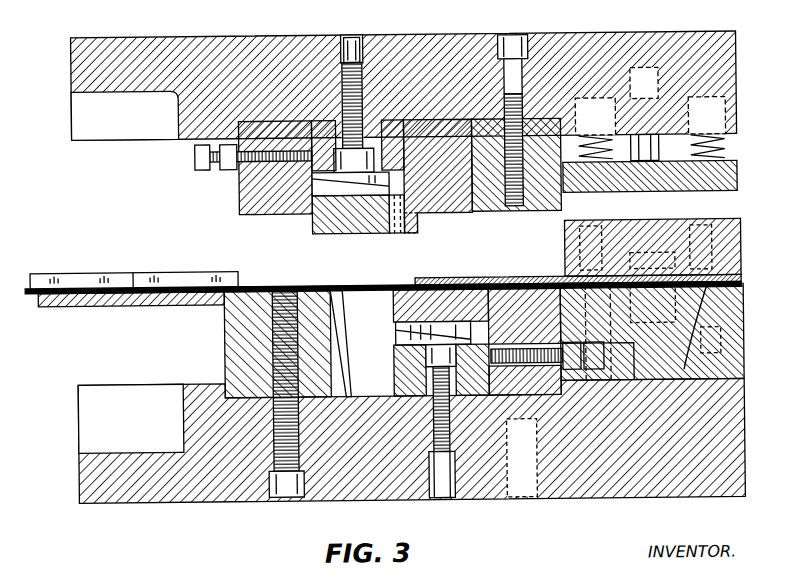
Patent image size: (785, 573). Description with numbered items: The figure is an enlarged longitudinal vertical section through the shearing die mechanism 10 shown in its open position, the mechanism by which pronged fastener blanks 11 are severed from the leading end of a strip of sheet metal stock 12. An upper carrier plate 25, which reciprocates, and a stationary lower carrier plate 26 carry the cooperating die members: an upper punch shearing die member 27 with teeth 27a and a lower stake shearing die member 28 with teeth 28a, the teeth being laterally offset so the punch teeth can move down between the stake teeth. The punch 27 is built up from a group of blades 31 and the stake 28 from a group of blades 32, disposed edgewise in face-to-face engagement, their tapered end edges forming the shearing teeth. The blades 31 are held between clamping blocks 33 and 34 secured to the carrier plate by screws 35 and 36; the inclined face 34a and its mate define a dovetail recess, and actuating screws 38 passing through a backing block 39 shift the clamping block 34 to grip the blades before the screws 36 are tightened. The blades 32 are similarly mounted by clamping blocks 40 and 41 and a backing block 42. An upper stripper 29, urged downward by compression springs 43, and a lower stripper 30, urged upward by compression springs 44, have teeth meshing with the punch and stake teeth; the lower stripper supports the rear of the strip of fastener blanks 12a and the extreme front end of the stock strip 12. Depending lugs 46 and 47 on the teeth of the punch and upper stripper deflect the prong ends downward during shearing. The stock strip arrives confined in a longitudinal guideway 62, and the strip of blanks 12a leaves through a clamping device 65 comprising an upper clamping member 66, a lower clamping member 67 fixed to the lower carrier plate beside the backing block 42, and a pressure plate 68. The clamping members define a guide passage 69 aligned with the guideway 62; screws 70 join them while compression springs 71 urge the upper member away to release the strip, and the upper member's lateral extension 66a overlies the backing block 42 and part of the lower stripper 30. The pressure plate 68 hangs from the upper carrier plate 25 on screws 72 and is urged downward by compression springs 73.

The shearing die mechanism 10 is at (175, 219).
The pronged fastener blanks 11 is at (415, 284).
The strip of sheet metal stock 12 is at (272, 286).
The strip of fastener blanks 12a is at (528, 277).
The upper carrier plate 25 is at (712, 24).
The lower carrier plate 26 is at (732, 448).
The punch shearing die member 27 is at (482, 255).
The teeth of the punch 27a is at (358, 234).
The stake shearing die member 28 is at (388, 275).
The teeth of the stake 28a is at (396, 330).
The upper stripper 29 is at (318, 228).
The lower stripper 30 is at (393, 306).
The blades of the punch 31 is at (460, 124).
The blades of the stake 32 is at (344, 290).
The clamping block 33 is at (565, 208).
The clamping block 34 is at (330, 130).
The inclined face of clamping block 34a is at (400, 125).
The screws 35 is at (530, 70).
The connecting screws 36 is at (372, 90).
The actuating screws 38 is at (196, 158).
The backing block 39 is at (240, 185).
The clamping block 40 is at (224, 350).
The clamping block 41 is at (380, 378).
The backing block 42 is at (555, 385).
The compression springs 43 is at (246, 202).
The compression springs 44 is at (440, 305).
The depending lugs 46 is at (397, 234).
The depending lugs 47 is at (410, 233).
The longitudinal guideway 62 is at (145, 270).
The clamping device 65 is at (746, 228).
The upper clamping member 66 is at (738, 262).
The lateral extension 66a is at (486, 277).
The lower clamping member 67 is at (740, 313).
The pressure plate 68 is at (738, 176).
The longitudinal guide passage 69 is at (688, 360).
The screws 70 is at (720, 224).
The compression springs 71 is at (676, 218).
The screws 72 is at (619, 147).
The compression springs 73 is at (728, 148).